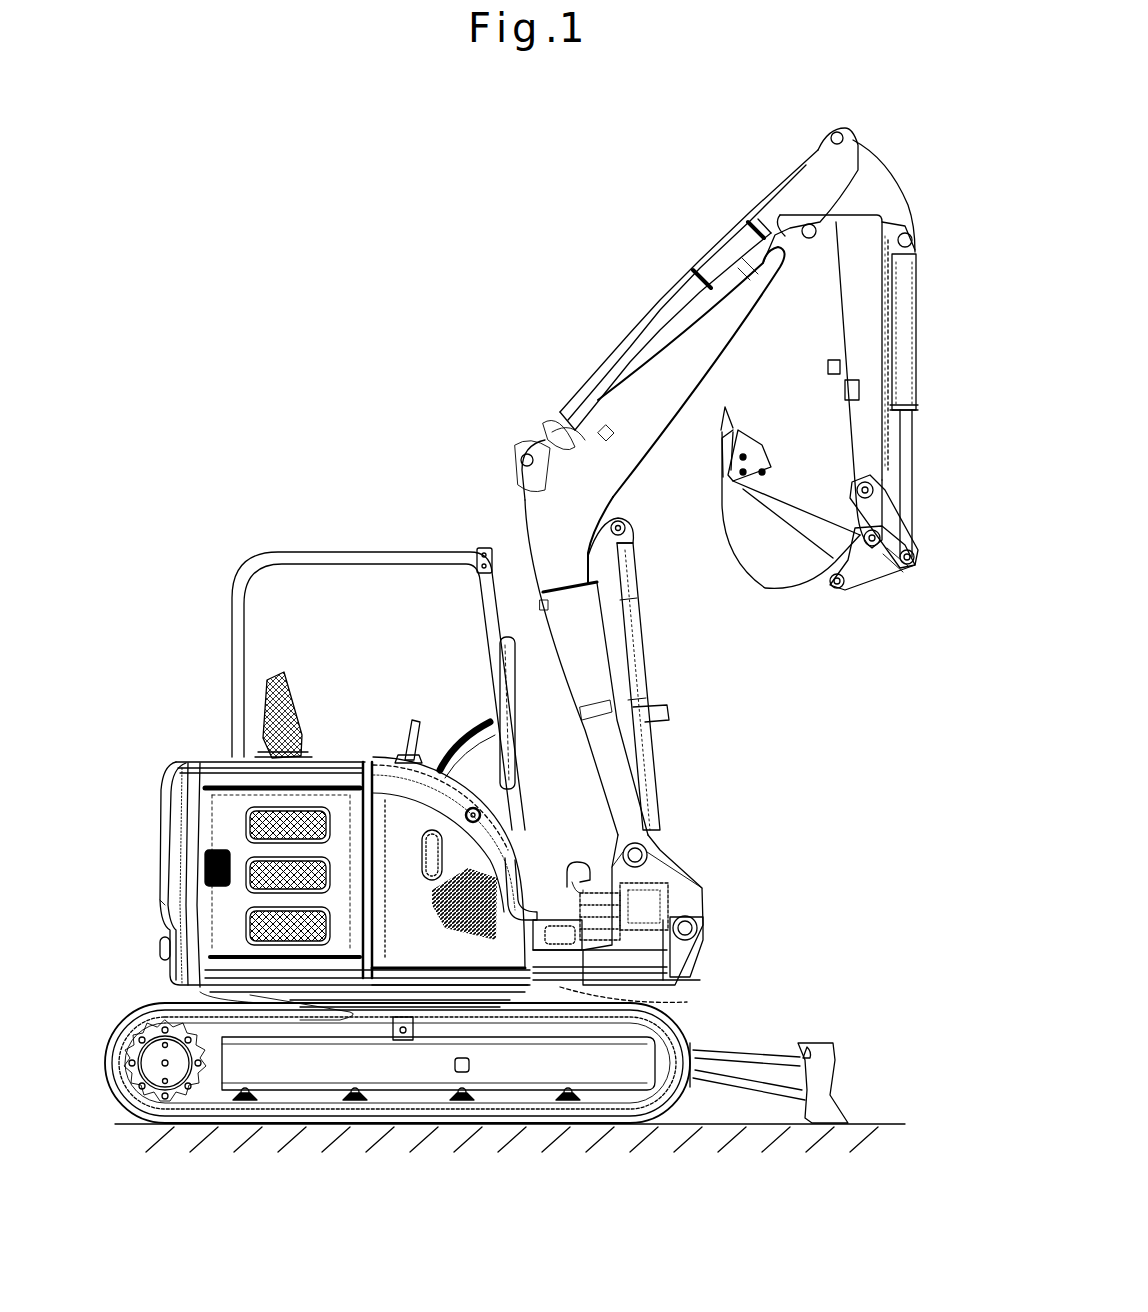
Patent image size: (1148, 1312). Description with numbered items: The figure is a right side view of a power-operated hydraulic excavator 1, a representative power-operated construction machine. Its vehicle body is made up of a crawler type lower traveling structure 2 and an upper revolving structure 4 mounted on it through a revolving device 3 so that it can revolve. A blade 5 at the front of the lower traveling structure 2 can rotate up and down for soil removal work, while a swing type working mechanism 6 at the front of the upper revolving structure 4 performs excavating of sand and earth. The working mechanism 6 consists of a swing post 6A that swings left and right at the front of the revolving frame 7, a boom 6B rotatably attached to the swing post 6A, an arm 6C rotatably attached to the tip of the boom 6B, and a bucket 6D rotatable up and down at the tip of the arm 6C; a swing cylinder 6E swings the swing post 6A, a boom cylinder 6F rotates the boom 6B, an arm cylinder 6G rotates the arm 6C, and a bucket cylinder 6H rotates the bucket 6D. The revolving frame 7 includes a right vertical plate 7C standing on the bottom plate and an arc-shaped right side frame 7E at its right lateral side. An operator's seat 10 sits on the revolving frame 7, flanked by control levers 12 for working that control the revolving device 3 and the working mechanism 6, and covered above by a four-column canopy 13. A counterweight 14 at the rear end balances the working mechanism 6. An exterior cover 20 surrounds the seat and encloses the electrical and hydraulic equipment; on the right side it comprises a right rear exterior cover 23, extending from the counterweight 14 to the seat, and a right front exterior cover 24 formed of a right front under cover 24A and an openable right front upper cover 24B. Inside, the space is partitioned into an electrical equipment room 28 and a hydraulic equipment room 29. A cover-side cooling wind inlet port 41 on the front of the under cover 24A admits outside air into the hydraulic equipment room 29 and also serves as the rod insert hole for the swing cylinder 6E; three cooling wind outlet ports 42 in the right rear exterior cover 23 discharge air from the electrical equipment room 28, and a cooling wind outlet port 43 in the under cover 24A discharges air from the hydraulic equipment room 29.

The power-operated hydraulic excavator 1 is at (371, 428).
The lower traveling structure 2 is at (585, 1072).
The revolving device 3 is at (360, 1000).
The upper revolving structure 4 is at (176, 764).
The blade 5 is at (820, 1085).
The swing type working mechanism 6 is at (652, 303).
The swing post 6A is at (647, 880).
The boom 6B is at (577, 480).
The arm 6C is at (845, 337).
The bucket 6D is at (763, 553).
The swing cylinder 6E is at (573, 953).
The boom cylinder 6F is at (672, 745).
The arm cylinder 6G is at (632, 352).
The bucket cylinder 6H is at (920, 340).
The revolving frame 7 is at (428, 1000).
The right vertical plate 7C is at (577, 917).
The right side frame 7E is at (287, 1000).
The operator's seat 10 is at (296, 735).
The control levers for working 12 is at (417, 718).
The canopy 13 is at (340, 553).
The counterweight 14 is at (173, 927).
The exterior cover 20 is at (193, 873).
The right rear exterior cover 23 is at (238, 910).
The right front exterior cover 24 is at (497, 796).
The right front under cover 24A is at (478, 950).
The right front upper cover 24B is at (393, 773).
The electrical equipment room 28 is at (228, 812).
The hydraulic equipment room 29 is at (410, 823).
The cover-side cooling wind inlet port for hydraulic equipment room 41 is at (560, 988).
The cover-side cooling wind outlet ports for electrical equipment room 42 is at (242, 866).
The cooling wind outlet port for hydraulic equipment room 43 is at (506, 853).